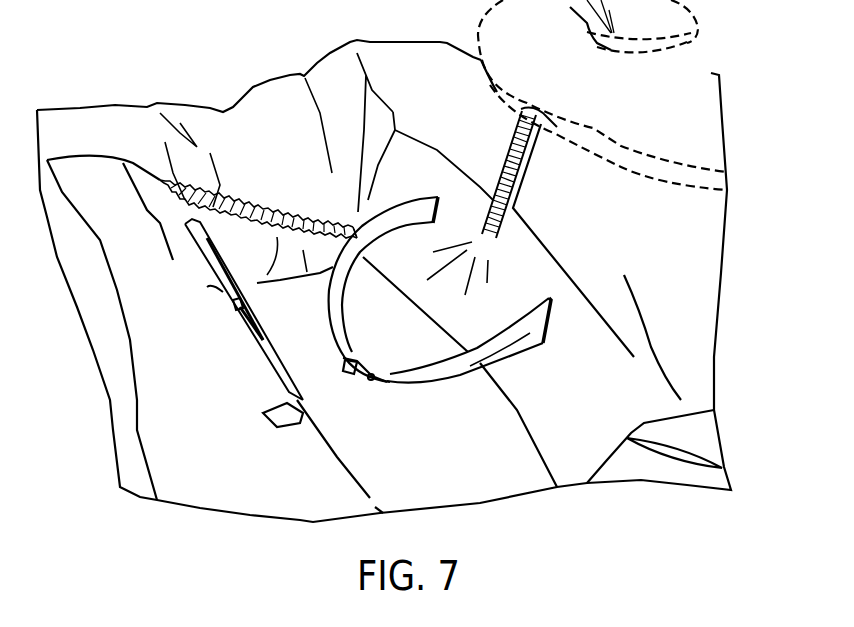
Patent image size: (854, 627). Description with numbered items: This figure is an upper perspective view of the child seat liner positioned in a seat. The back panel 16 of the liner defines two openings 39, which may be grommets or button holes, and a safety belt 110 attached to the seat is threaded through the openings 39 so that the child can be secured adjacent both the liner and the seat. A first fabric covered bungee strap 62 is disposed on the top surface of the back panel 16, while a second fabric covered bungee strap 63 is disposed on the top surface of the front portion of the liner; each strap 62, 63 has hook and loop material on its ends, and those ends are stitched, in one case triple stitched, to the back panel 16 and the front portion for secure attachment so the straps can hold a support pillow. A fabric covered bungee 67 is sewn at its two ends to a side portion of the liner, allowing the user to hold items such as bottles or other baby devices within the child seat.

The back panel 16 is at (707, 280).
The openings 39 is at (438, 198).
The first fabric covered bungee strap 62 is at (513, 193).
The second fabric covered bungee strap 63 is at (218, 297).
The fabric covered bungees 67 is at (292, 213).
The safety belt 110 is at (556, 362).